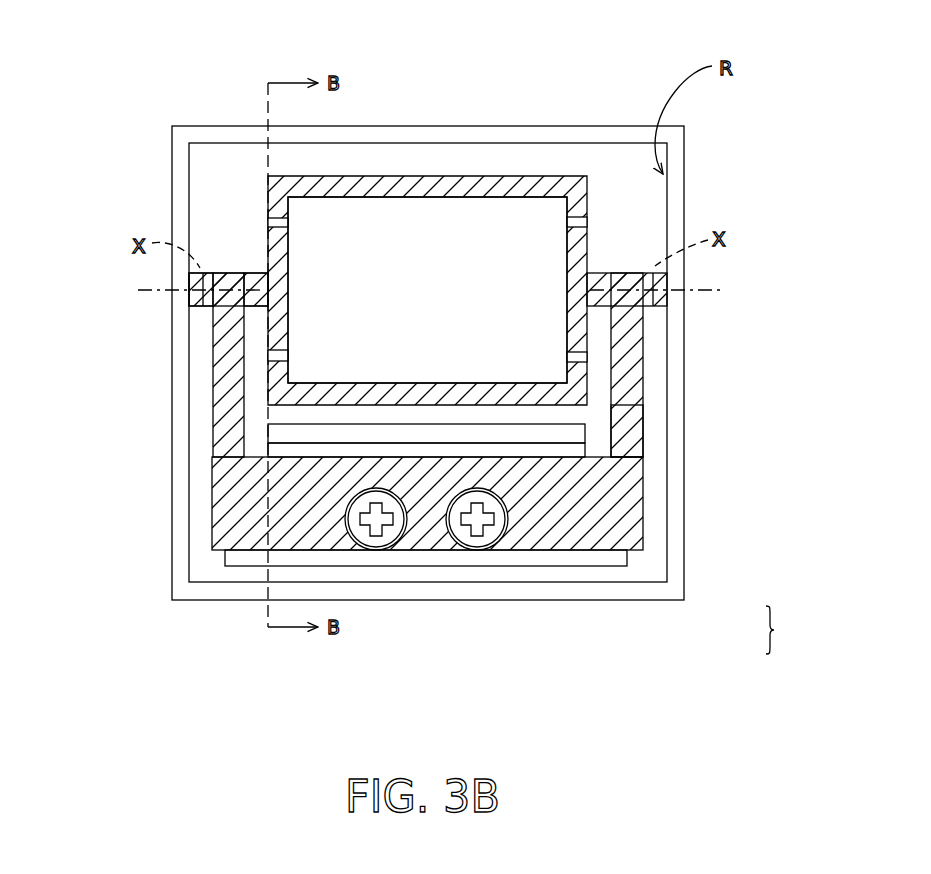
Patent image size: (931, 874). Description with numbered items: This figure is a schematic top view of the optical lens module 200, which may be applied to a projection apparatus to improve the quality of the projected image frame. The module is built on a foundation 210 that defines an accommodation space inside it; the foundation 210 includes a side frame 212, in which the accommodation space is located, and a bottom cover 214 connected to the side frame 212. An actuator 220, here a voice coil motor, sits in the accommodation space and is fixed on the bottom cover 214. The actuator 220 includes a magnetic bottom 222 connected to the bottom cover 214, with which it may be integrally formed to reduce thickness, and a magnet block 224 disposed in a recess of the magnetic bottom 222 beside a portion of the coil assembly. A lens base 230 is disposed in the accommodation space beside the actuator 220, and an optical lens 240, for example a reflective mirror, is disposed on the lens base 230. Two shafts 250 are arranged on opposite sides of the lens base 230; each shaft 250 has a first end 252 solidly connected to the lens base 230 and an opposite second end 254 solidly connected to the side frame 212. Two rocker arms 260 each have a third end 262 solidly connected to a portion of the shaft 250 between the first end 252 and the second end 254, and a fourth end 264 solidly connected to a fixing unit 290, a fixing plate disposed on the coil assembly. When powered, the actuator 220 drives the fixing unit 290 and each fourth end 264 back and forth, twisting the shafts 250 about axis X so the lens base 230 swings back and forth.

The optical lens module 200 is at (808, 734).
The foundation 210 is at (789, 630).
The side frame 212 is at (677, 545).
The bottom cover 214 is at (647, 570).
The actuator 220 is at (489, 562).
The magnetic bottom 222 is at (320, 435).
The magnet block 224 is at (422, 450).
The lens base 230 is at (606, 246).
The optical lens 240 is at (500, 218).
The shaft 250 is at (207, 304).
The first end 252 is at (257, 298).
The second end 254 is at (189, 299).
The rocker arm 260 is at (227, 363).
The third end 262 is at (630, 317).
The fourth end 264 is at (632, 438).
The fixing unit 290 is at (538, 522).